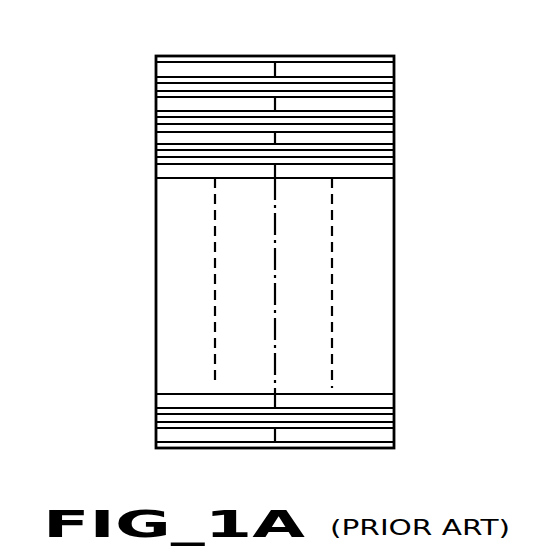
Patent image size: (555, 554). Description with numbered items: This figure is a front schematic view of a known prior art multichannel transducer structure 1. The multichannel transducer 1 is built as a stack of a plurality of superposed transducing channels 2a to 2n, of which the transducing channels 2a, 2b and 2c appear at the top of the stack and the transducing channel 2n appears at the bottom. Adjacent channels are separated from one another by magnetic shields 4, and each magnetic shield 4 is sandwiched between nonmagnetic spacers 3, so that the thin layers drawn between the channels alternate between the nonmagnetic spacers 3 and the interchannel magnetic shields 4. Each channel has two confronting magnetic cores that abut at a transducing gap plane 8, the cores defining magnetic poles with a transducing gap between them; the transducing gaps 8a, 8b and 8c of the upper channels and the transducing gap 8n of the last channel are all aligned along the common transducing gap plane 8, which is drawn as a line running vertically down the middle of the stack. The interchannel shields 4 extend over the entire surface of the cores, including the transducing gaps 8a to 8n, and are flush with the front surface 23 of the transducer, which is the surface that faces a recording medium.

The multichannel transducer structure 1 is at (128, 41).
The transducing channel 2a is at (384, 70).
The transducing channel 2b is at (384, 103).
The transducing channel 2c is at (384, 138).
The transducing channel 2n is at (385, 438).
The nonmagnetic spacer 3 is at (155, 81).
The magnetic shield 4 is at (155, 87).
The transducing gap plane 8 is at (273, 212).
The transducing gap 8a is at (277, 70).
The transducing gap 8b is at (276, 106).
The transducing gap 8c is at (276, 138).
The transducing gap 8n is at (274, 435).
The front surface 23 is at (383, 248).